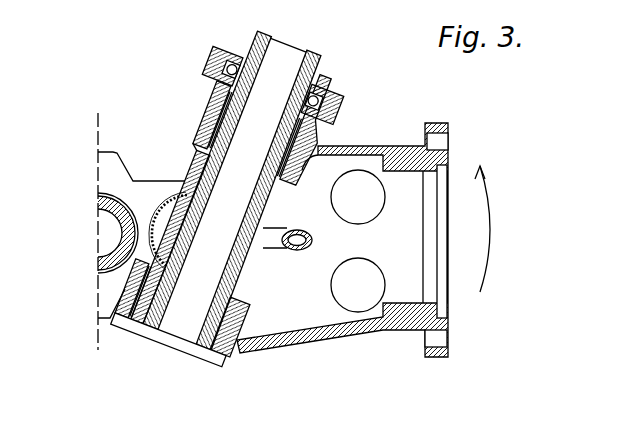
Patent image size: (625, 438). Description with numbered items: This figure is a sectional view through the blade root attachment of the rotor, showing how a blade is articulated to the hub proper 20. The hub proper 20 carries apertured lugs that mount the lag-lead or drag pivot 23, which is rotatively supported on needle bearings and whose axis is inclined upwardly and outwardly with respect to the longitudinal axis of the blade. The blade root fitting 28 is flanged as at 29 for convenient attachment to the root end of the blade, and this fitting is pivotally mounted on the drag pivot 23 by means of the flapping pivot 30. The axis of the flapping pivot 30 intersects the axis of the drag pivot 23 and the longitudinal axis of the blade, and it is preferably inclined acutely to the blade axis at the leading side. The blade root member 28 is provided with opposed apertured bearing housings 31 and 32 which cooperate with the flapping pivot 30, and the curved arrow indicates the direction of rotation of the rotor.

The hub proper 20 is at (108, 275).
The lag-lead or drag pivot 23 is at (200, 165).
The blade root fitting 28 is at (300, 340).
The flange 29 is at (436, 124).
The flapping pivot 30 is at (258, 211).
The bearing housing 31 is at (209, 108).
The bearing housing 32 is at (233, 350).